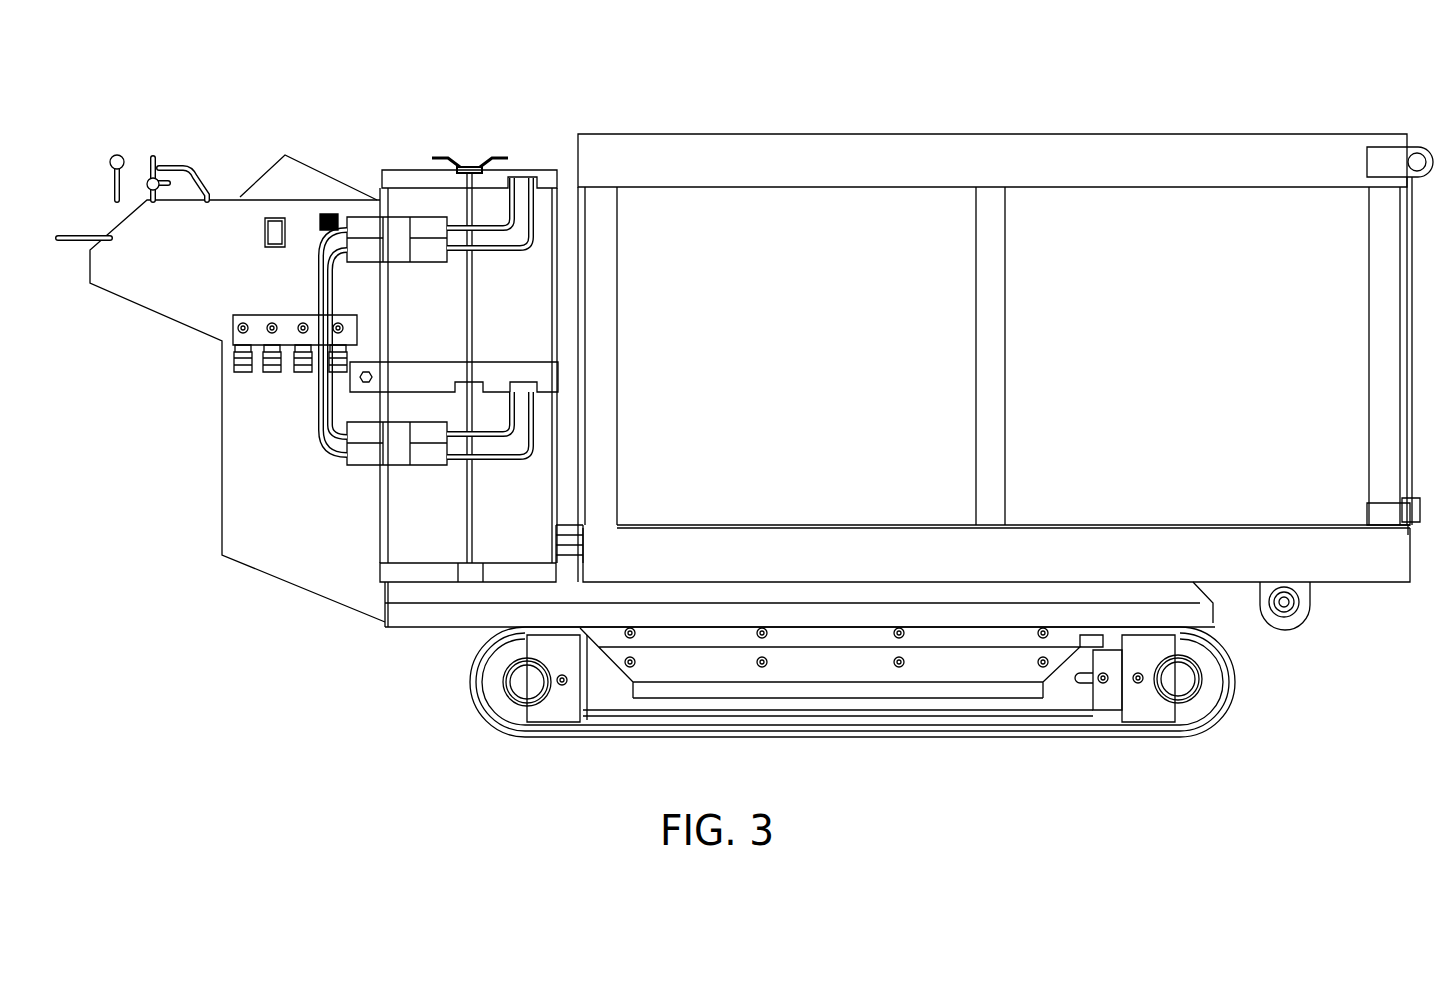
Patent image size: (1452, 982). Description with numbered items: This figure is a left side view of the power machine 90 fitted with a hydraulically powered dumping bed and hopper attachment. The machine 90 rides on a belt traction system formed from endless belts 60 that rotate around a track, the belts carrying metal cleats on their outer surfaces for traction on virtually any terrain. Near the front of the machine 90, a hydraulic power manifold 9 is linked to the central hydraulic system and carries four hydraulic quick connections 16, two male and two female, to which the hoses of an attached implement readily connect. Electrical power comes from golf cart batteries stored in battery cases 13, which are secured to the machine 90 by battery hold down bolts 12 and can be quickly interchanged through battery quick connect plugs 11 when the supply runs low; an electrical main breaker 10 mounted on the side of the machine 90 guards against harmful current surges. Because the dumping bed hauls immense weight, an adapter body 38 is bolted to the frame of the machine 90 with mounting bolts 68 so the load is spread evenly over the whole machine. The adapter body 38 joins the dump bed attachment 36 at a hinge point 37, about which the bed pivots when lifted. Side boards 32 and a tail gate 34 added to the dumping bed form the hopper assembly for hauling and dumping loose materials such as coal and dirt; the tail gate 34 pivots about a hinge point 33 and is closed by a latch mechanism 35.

The hydraulic power manifold 9 is at (285, 325).
The electrical main breaker 10 is at (265, 236).
The battery quick connect plug 11 is at (398, 253).
The battery hold down bolt 12 is at (460, 165).
The battery case 13 is at (540, 236).
The hydraulic quick connection 16 is at (276, 375).
The side board 32 is at (992, 160).
The hinge point 33 is at (1417, 153).
The tail gate 34 is at (1412, 322).
The latch mechanism 35 is at (1402, 484).
The dump bed attachment 36 is at (1393, 557).
The hinge point 37 is at (1296, 598).
The adapter body 38 is at (1203, 614).
The endless belt 60 is at (470, 683).
The mounting bolt 68 is at (770, 633).
The machine 90 is at (425, 145).